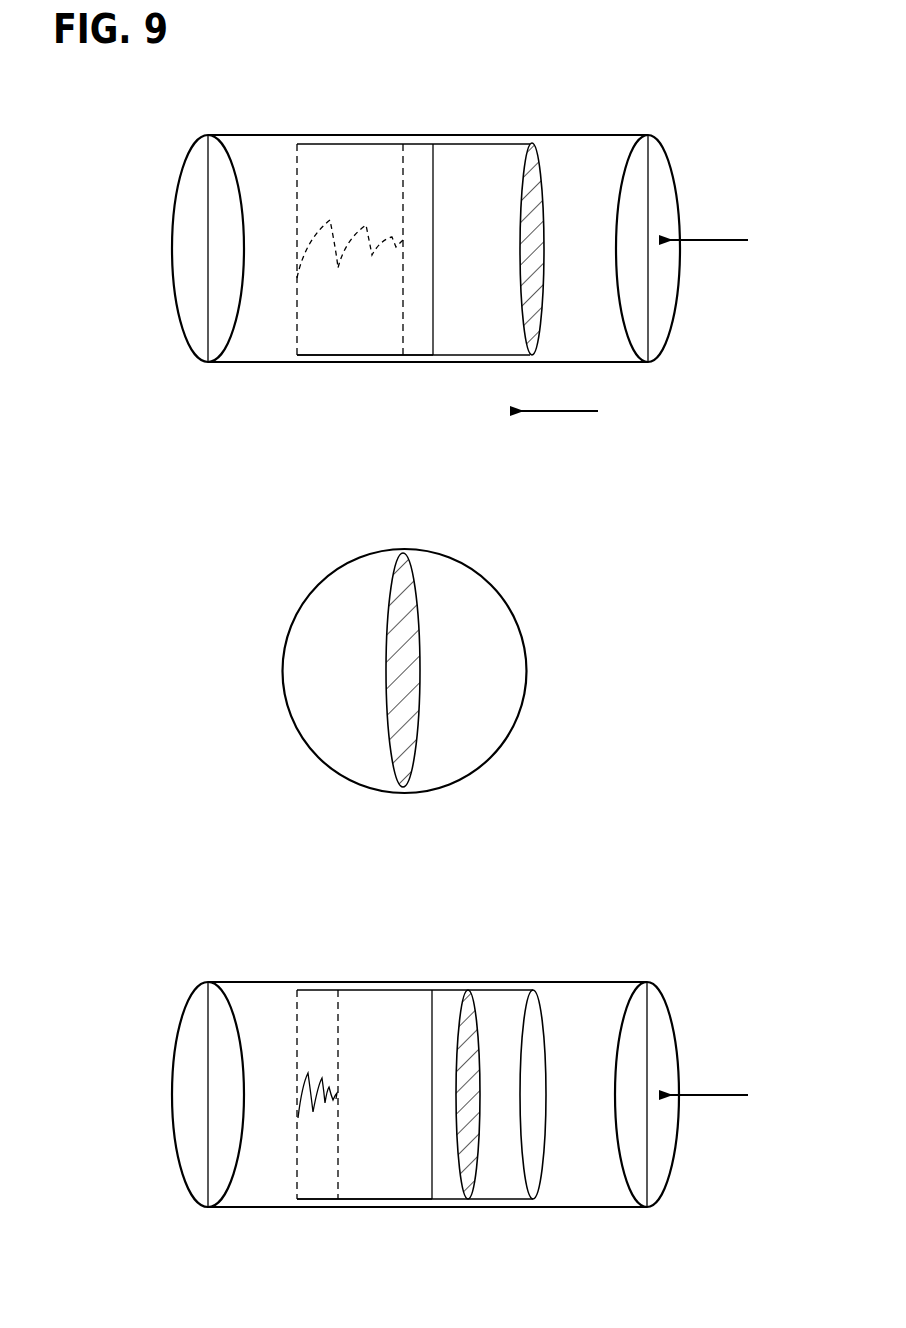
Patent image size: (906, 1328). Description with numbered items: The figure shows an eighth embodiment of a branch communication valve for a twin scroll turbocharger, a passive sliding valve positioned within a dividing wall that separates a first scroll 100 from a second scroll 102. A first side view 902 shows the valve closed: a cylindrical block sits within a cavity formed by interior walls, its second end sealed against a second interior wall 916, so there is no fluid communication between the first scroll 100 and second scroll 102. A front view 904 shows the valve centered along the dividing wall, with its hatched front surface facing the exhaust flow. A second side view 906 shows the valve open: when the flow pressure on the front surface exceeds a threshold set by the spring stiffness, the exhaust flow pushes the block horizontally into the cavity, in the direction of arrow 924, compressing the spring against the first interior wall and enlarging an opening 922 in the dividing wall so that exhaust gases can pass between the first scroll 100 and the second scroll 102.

The first side view 902 is at (681, 64).
The front view 904 is at (542, 500).
The second side view 906 is at (639, 912).
The first scroll 100 is at (313, 728).
The second scroll 102 is at (483, 736).
The second interior wall 916 is at (537, 990).
The opening 922 is at (492, 1185).
The arrow 924 is at (575, 411).